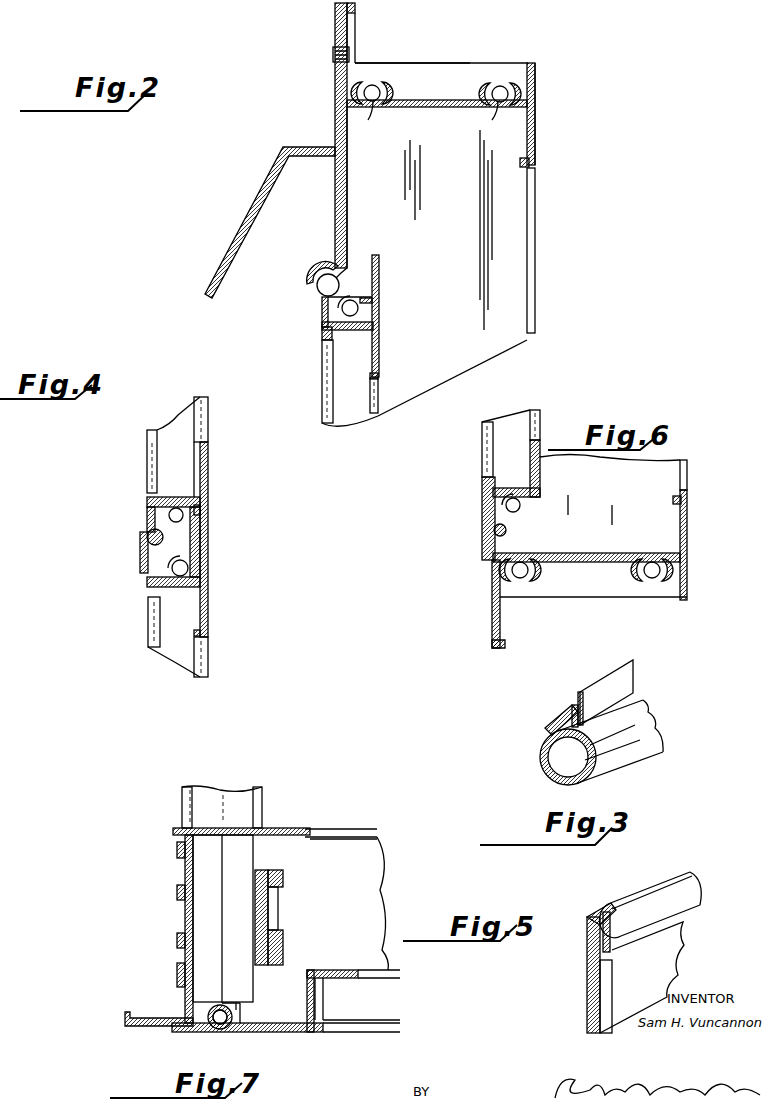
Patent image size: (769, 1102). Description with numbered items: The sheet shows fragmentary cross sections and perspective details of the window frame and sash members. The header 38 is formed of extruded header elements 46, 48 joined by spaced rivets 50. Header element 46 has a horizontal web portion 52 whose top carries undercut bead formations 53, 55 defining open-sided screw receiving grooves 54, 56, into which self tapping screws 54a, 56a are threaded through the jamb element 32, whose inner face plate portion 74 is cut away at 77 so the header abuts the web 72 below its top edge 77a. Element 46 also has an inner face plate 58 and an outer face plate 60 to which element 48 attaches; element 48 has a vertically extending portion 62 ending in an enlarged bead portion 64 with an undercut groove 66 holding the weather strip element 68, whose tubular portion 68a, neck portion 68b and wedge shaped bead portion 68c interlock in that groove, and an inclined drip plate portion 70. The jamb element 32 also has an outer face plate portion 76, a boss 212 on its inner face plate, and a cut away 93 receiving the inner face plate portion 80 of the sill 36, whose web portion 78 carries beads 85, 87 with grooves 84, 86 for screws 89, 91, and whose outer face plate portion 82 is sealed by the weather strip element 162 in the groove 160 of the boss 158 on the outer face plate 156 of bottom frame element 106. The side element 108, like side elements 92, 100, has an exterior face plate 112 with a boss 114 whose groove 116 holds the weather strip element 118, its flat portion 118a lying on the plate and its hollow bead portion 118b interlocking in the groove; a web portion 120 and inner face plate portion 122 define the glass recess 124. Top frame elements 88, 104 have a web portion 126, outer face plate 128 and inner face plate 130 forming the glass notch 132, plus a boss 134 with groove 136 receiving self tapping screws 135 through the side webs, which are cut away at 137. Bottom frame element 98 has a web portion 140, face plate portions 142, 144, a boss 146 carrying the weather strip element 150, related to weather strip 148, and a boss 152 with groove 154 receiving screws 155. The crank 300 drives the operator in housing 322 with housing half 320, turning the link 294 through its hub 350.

In FIG. 2, the jamb element 32 is at (510, 223).
In FIG. 6, the jamb element 32 is at (668, 481).
In FIG. 7, the jamb element 32 is at (185, 898).
In FIG. 6, the sill 36 is at (490, 634).
In FIG. 7, the sill 36 is at (362, 862).
In FIG. 2, the header 38 is at (546, 101).
In FIG. 2, the header element 46 is at (541, 73).
In FIG. 2, the header element 48 is at (335, 117).
In FIG. 2, the rivet 50 is at (333, 56).
In FIG. 2, the web portion 52 is at (430, 100).
In FIG. 2, the undercut bead formation 53 is at (381, 94).
In FIG. 2, the screw receiving groove 54 is at (374, 85).
In FIG. 2, the self tapping screw 54a is at (381, 119).
In FIG. 2, the undercut bead formation 55 is at (492, 94).
In FIG. 2, the screw receiving groove 56 is at (503, 86).
In FIG. 2, the self tapping screw 56a is at (501, 119).
In FIG. 2, the inner face plate 58 is at (540, 142).
In FIG. 2, the outer face plate 60 is at (351, 34).
In FIG. 2, the vertically extending portion 62 is at (347, 190).
In FIG. 2, the enlarged bead portion 64 is at (316, 264).
In FIG. 2, the undercut groove 66 is at (345, 258).
In FIG. 2, the weather strip element 68 is at (345, 282).
In FIG. 3, the weather strip element 68 is at (633, 730).
In FIG. 3, the tubular portion 68a is at (548, 762).
In FIG. 3, the neck portion 68b is at (547, 726).
In FIG. 3, the bead portion 68c is at (572, 712).
In FIG. 2, the drip plate portion 70 is at (262, 190).
In FIG. 2, the web 72 is at (428, 386).
In FIG. 6, the web 72 is at (628, 499).
In FIG. 7, the web 72 is at (196, 922).
In FIG. 2, the inner face plate portion 74 is at (536, 316).
In FIG. 6, the inner face plate portion 74 is at (688, 471).
In FIG. 7, the inner face plate portion 74 is at (278, 828).
In FIG. 7, the outer face plate portion 76 is at (140, 1026).
In FIG. 2, the cut away 77 is at (535, 162).
In FIG. 2, the top edge 77a is at (462, 63).
In FIG. 6, the web portion 78 is at (596, 553).
In FIG. 6, the inner face plate portion 80 is at (688, 532).
In FIG. 6, the outer face plate portion 82 is at (492, 606).
In FIG. 6, the screw receiving groove 84 is at (520, 580).
In FIG. 6, the bead 85 is at (535, 575).
In FIG. 6, the screw receiving groove 86 is at (652, 580).
In FIG. 6, the bead 87 is at (640, 572).
In FIG. 2, the top frame element 88 is at (388, 315).
In FIG. 6, the self tapping screw 89 is at (500, 572).
In FIG. 7, the self tapping screw 89 is at (177, 940).
In FIG. 6, the self tapping screw 91 is at (660, 560).
In FIG. 7, the self tapping screw 91 is at (177, 892).
In FIG. 2, the side element 92 is at (322, 383).
In FIG. 6, the cut away 93 is at (688, 502).
In FIG. 4, the bottom frame element 98 is at (208, 479).
In FIG. 4, the side element 100 is at (147, 452).
In FIG. 4, the top frame element 104 is at (208, 576).
In FIG. 6, the bottom frame element 106 is at (540, 491).
In FIG. 7, the bottom frame element 106 is at (360, 1032).
In FIG. 4, the side element 108 is at (155, 650).
In FIG. 7, the side element 108 is at (270, 1023).
In FIG. 7, the exterior face plate 112 is at (290, 1033).
In FIG. 7, the boss 114 is at (245, 1032).
In FIG. 7, the groove 116 is at (228, 1002).
In FIG. 5, the weather strip element 118 is at (587, 968).
In FIG. 7, the weather strip element 118 is at (218, 1028).
In FIG. 5, the flat portion 118a is at (590, 1000).
In FIG. 5, the hollow bead portion 118b is at (587, 931).
In FIG. 2, the web portion 120 is at (348, 414).
In FIG. 4, the web portion 120 is at (172, 423).
In FIG. 7, the web portion 120 is at (307, 975).
In FIG. 7, the inner face plate portion 122 is at (335, 970).
In FIG. 7, the recess 124 is at (340, 988).
In FIG. 2, the web portion 126 is at (355, 330).
In FIG. 4, the web portion 126 is at (175, 590).
In FIG. 2, the outer face plate 128 is at (320, 330).
In FIG. 4, the outer face plate 128 is at (150, 612).
In FIG. 2, the inner face plate 130 is at (382, 352).
In FIG. 4, the inner face plate 130 is at (208, 613).
In FIG. 2, the window glass receiving notch 132 is at (373, 382).
In FIG. 4, the window glass receiving notch 132 is at (208, 648).
In FIG. 2, the boss 134 is at (372, 305).
In FIG. 4, the boss 134 is at (196, 560).
In FIG. 2, the self tapping screw 135 is at (322, 306).
In FIG. 4, the self tapping screw 135 is at (150, 586).
In FIG. 2, the groove 136 is at (357, 298).
In FIG. 4, the groove 136 is at (178, 560).
In FIG. 2, the cut away 137 is at (380, 378).
In FIG. 4, the cut away 137 is at (205, 636).
In FIG. 4, the web portion 140 is at (200, 500).
In FIG. 4, the outer face plate portion 142 is at (208, 461).
In FIG. 4, the inner face plate portion 144 is at (140, 558).
In FIG. 4, the boss 146 is at (163, 537).
In FIG. 4, the weather strip 148 is at (148, 538).
In FIG. 4, the weather strip element 150 is at (140, 572).
In FIG. 4, the boss 152 is at (200, 516).
In FIG. 4, the groove 154 is at (177, 508).
In FIG. 4, the self tapping screw 155 is at (168, 516).
In FIG. 6, the outer face plate 156 is at (482, 516).
In FIG. 6, the boss 158 is at (517, 510).
In FIG. 6, the groove 160 is at (508, 536).
In FIG. 6, the weather strip element 162 is at (486, 540).
In FIG. 7, the boss 212 is at (262, 838).
In FIG. 7, the link 294 is at (283, 938).
In FIG. 7, the crank 300 is at (200, 800).
In FIG. 7, the housing half 320 is at (268, 895).
In FIG. 7, the housing 322 is at (229, 852).
In FIG. 7, the hub 350 is at (278, 915).